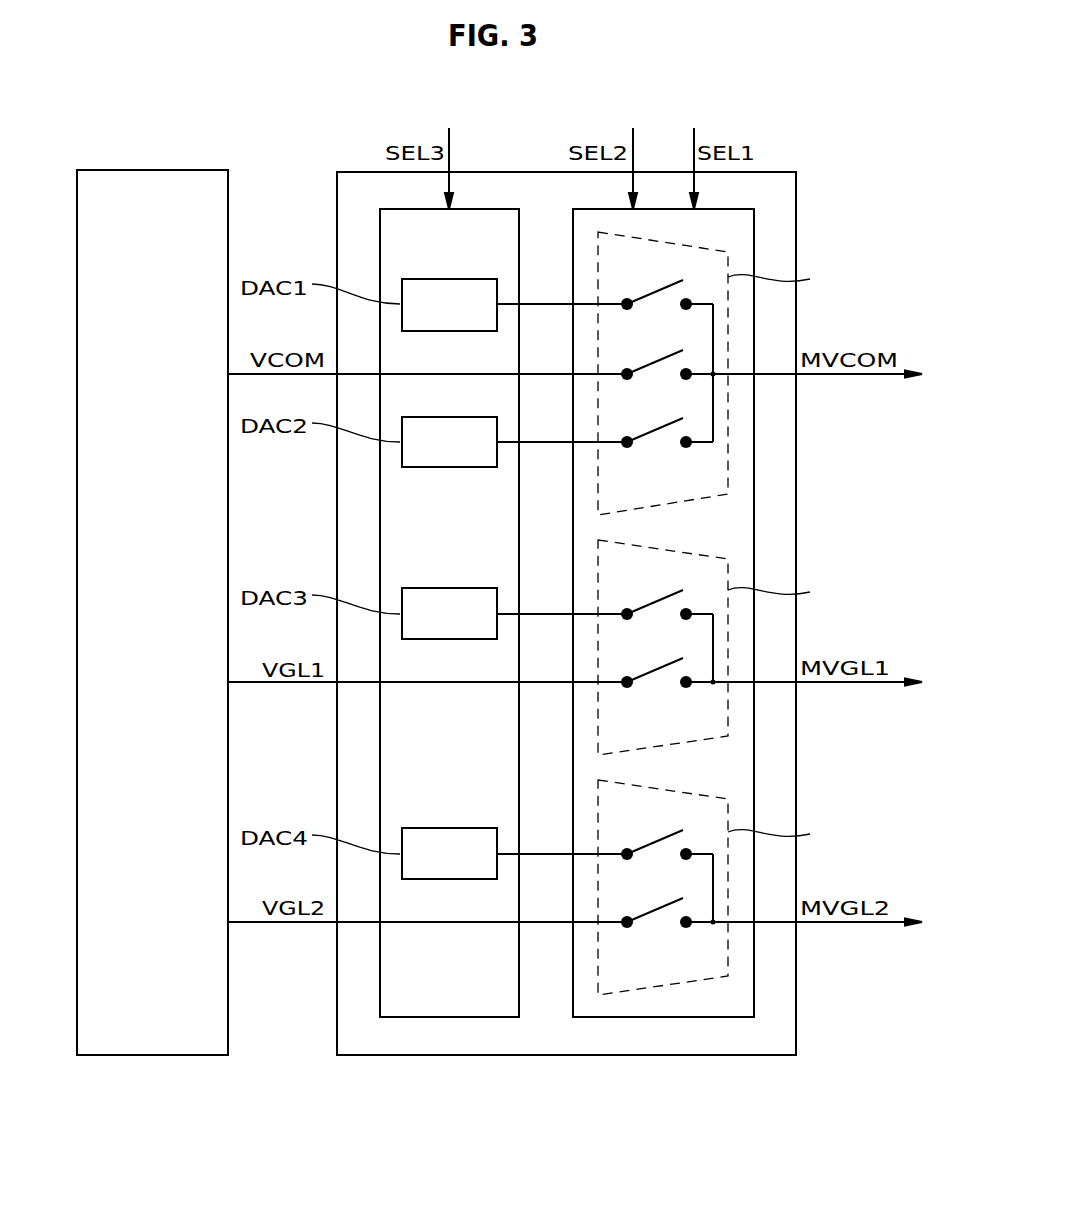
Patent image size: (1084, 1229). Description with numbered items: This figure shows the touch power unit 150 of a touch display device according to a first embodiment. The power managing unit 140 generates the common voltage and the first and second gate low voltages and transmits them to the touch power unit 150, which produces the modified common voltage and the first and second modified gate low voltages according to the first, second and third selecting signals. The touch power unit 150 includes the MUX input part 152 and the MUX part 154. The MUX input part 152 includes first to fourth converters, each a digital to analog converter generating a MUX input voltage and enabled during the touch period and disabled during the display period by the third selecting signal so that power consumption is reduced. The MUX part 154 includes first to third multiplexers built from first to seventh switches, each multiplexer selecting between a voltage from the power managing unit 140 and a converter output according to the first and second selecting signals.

The power managing unit 140 is at (155, 170).
The touch power unit 150 is at (520, 172).
The MUX input part 152 is at (449, 1017).
The MUX part 154 is at (663, 1017).